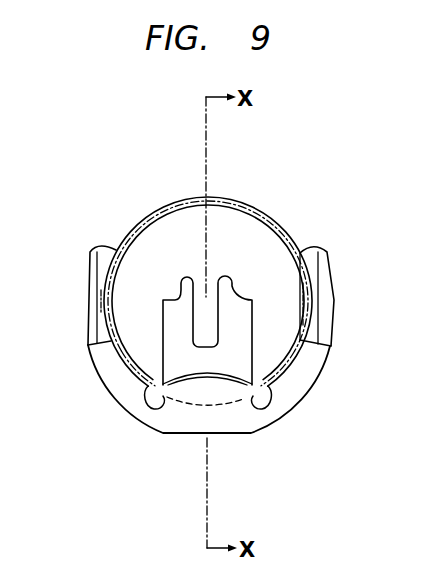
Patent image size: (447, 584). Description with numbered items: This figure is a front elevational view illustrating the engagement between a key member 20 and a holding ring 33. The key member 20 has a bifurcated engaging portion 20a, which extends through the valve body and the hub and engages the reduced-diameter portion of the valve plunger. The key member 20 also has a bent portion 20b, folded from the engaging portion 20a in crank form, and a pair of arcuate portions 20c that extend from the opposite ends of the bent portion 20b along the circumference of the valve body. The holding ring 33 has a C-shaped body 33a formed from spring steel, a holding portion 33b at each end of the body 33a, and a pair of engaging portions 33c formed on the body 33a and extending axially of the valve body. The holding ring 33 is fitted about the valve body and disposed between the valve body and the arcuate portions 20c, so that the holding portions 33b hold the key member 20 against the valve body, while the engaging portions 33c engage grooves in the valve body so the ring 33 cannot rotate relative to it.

The key member 20 is at (110, 402).
The bifurcated engaging portion 20a is at (237, 282).
The bent portion 20b is at (213, 400).
The arcuate portions 20c is at (335, 301).
The holding ring 33 is at (133, 221).
The C-shaped body 33a is at (243, 196).
The holding portion 33b is at (156, 404).
The engaging portions 33c is at (110, 341).